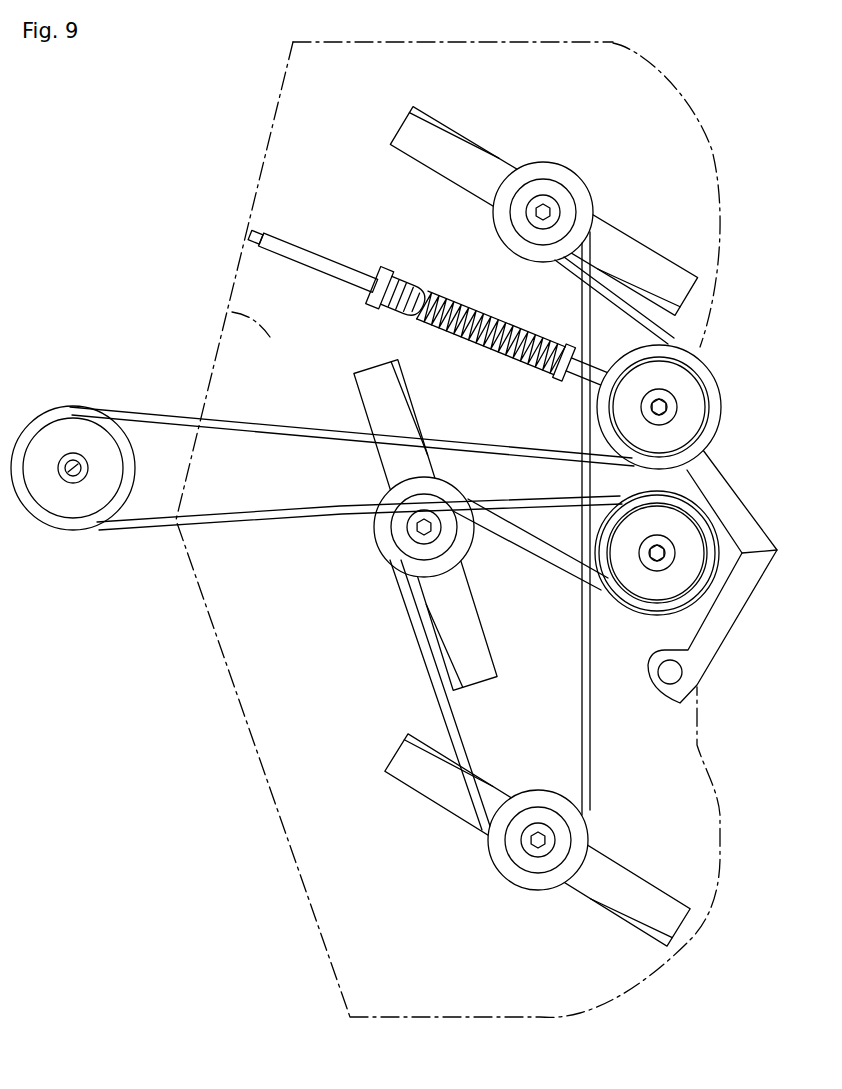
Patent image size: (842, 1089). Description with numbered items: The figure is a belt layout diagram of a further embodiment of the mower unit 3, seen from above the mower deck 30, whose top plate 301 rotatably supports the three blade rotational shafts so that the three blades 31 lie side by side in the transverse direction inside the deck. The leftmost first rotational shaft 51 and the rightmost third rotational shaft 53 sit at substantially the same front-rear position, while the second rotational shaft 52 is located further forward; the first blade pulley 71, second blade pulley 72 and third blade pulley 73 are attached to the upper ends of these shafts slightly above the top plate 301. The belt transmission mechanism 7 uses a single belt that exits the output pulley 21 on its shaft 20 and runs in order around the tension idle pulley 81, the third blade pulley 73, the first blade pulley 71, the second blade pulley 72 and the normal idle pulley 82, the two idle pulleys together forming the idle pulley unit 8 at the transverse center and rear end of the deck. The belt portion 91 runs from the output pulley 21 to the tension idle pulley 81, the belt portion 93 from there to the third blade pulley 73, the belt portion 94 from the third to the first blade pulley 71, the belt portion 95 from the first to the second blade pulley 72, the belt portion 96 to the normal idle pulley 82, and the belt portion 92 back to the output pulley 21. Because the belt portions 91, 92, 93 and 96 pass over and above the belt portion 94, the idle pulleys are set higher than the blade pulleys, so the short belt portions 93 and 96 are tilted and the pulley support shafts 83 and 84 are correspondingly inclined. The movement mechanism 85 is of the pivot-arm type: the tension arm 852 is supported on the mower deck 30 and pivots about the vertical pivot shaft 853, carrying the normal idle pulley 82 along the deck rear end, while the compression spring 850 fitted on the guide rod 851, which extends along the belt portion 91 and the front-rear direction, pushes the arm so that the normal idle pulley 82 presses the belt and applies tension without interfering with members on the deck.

The mower unit 3 is at (190, 124).
The mower deck 30 is at (268, 787).
The top plate 301 is at (240, 318).
The blade 31 is at (412, 140).
The belt transmission mechanism 7 is at (385, 520).
The input shaft 20 is at (86, 463).
The output pulley 21 is at (60, 430).
The first rotational shaft 51 is at (535, 845).
The second rotational shaft 52 is at (414, 530).
The third rotational shaft 53 is at (548, 208).
The first blade pulley 71 is at (546, 886).
The second blade pulley 72 is at (384, 498).
The third blade pulley 73 is at (530, 168).
The idle pulley unit 8 is at (707, 356).
The tension idle pulley 81 is at (695, 393).
The normal idle pulley 82 is at (640, 596).
The pulley support shaft 83 is at (665, 394).
The pulley support shaft 84 is at (648, 542).
The movement mechanism 85 is at (714, 595).
The compression spring 850 is at (515, 378).
The guide rod 851 is at (484, 322).
The tension arm 852 is at (735, 500).
The pivot shaft 853 is at (676, 676).
The belt portion 91 is at (252, 420).
The belt portion 92 is at (237, 512).
The belt portion 93 is at (626, 310).
The belt portion 94 is at (590, 675).
The belt portion 95 is at (420, 672).
The belt portion 96 is at (523, 556).